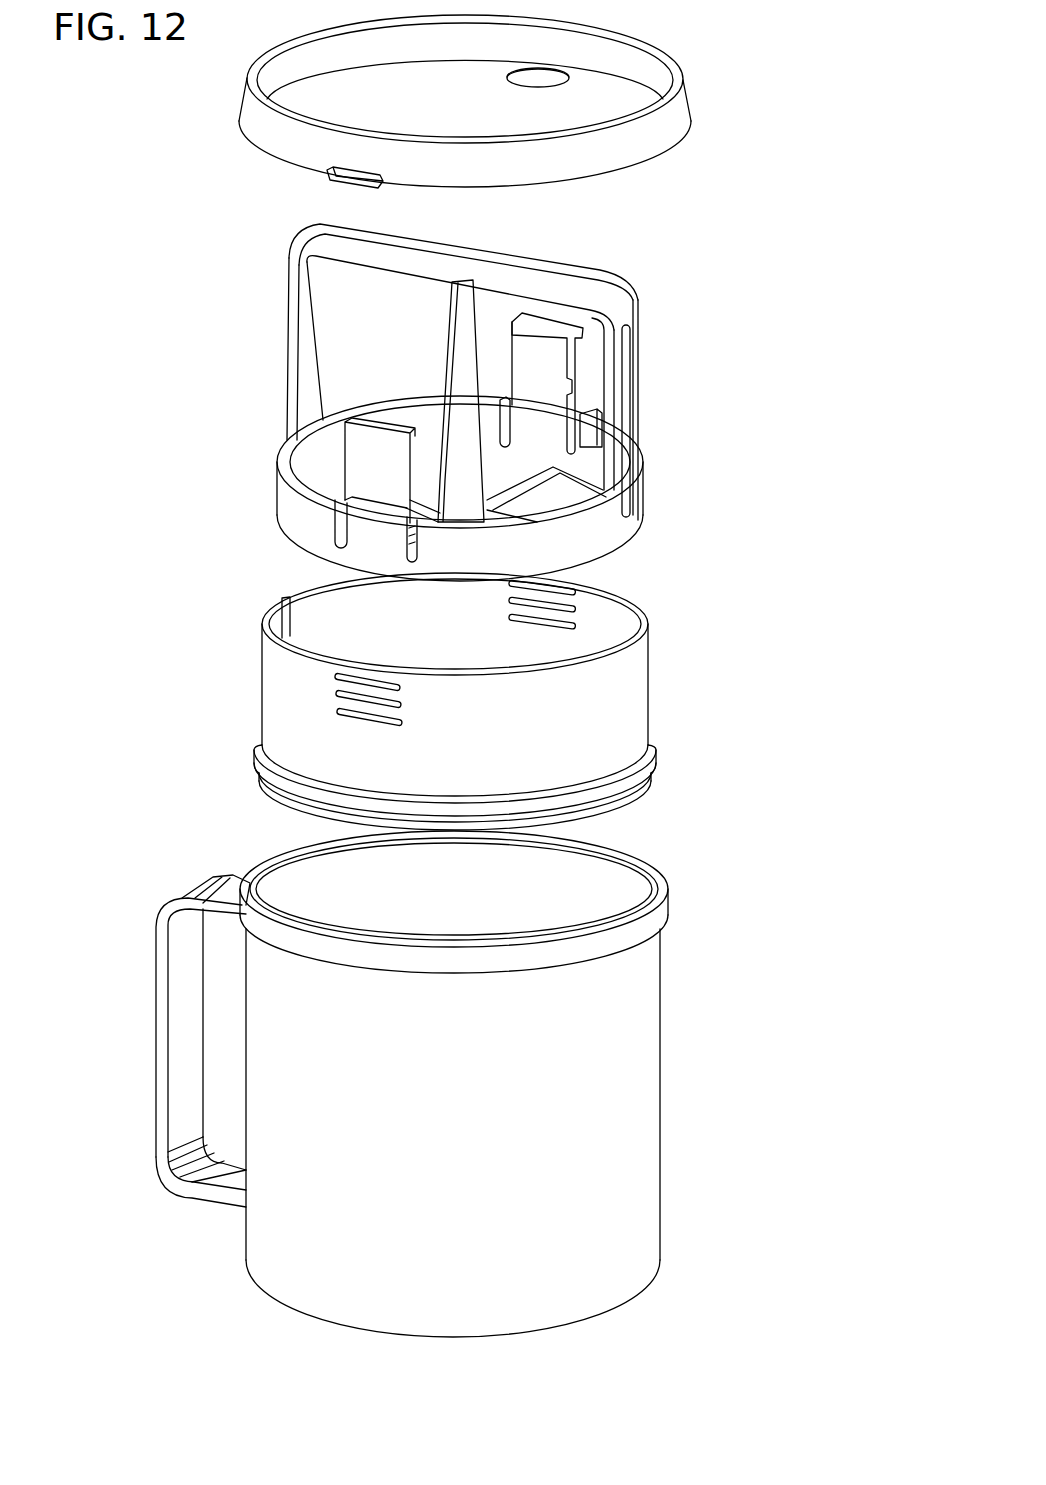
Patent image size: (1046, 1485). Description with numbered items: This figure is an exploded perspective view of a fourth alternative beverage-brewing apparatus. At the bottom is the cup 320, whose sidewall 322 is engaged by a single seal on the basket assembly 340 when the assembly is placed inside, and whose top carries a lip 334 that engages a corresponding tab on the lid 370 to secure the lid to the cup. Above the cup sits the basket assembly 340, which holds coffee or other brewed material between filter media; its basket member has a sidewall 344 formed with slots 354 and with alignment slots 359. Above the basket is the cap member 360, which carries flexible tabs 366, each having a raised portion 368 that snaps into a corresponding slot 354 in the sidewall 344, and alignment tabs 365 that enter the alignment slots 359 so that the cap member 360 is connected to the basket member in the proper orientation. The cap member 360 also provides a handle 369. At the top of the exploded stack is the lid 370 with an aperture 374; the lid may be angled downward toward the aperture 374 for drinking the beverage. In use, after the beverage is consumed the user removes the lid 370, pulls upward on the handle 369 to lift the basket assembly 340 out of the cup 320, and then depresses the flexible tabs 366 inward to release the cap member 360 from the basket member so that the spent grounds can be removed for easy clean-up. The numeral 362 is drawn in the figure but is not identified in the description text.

The cup 320 is at (468, 1084).
The sidewall 322 is at (660, 998).
The lip 334 is at (647, 935).
The basket assembly 340 is at (430, 698).
The sidewall 344 is at (637, 697).
The slots 354 is at (352, 711).
The alignment slots 359 is at (287, 613).
The cap member 360 is at (458, 395).
The ring 362 is at (567, 493).
The alignment tabs 365 is at (627, 395).
The flexible tabs 366 is at (365, 453).
The raised portion 368 is at (370, 508).
The handle 369 is at (589, 271).
The lid 370 is at (422, 96).
The aperture 374 is at (550, 77).